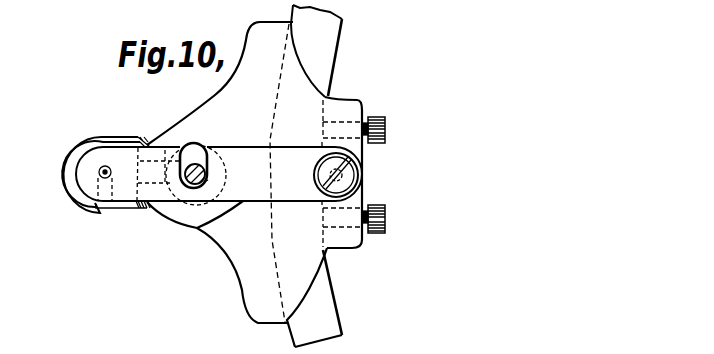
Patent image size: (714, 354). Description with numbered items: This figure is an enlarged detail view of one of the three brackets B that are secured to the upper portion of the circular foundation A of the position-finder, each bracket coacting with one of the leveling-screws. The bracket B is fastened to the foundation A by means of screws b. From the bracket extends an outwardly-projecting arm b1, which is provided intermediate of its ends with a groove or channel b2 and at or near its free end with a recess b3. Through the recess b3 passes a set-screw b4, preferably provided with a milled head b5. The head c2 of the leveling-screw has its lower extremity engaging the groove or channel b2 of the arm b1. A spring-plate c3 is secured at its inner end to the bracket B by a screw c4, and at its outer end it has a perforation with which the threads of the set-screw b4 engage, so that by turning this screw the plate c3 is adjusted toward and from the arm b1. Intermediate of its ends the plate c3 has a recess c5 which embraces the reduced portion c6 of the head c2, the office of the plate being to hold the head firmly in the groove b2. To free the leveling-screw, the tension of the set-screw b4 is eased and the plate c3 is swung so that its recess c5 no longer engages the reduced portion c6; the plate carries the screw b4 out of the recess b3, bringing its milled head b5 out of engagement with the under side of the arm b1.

The circular foundation A is at (328, 42).
The bracket B is at (249, 172).
The screws b is at (396, 216).
The outwardly-projecting arm b1 is at (143, 206).
The groove or channel b2 is at (151, 144).
The recess b3 is at (97, 210).
The set-screw b4 is at (99, 170).
The milled head b5 is at (77, 204).
The head c2 is at (190, 146).
The spring-plate c3 is at (219, 174).
The screw c4 is at (352, 175).
The recess c5 is at (211, 155).
The reduced portion c6 is at (208, 180).